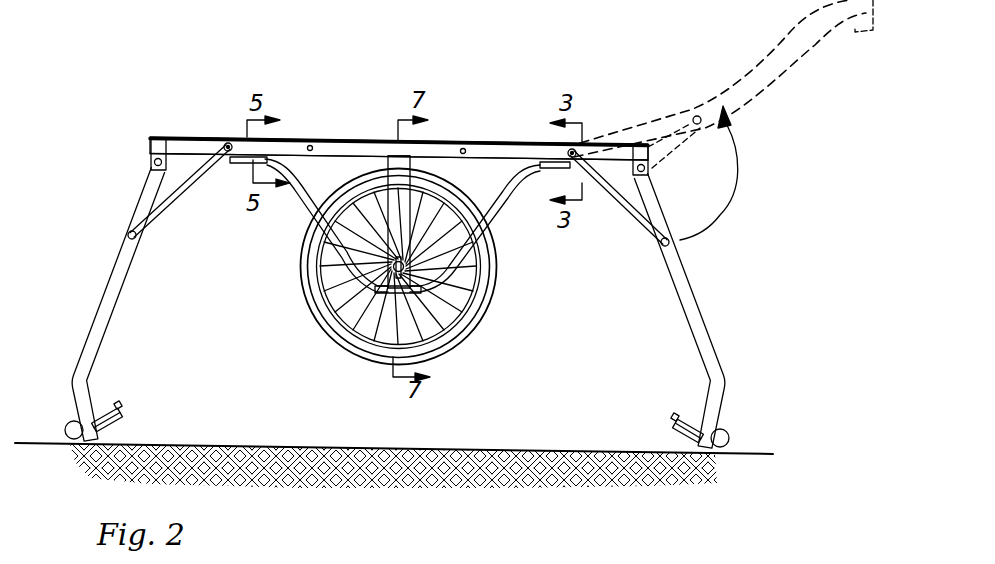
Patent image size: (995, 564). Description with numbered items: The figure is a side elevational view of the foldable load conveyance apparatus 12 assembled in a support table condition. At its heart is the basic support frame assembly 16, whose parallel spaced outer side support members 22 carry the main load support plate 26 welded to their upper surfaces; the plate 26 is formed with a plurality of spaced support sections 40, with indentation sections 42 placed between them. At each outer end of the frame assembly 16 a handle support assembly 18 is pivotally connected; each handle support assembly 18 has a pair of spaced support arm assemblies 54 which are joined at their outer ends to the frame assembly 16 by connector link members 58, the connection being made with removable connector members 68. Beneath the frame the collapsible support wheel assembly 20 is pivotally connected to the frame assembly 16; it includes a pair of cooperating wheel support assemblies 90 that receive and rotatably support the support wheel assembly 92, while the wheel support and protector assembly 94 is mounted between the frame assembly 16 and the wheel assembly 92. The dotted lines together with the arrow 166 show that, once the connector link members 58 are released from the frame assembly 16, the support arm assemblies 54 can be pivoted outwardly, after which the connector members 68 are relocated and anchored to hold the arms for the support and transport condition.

The foldable load conveyance apparatus 12 is at (453, 72).
The basic support frame assembly 16 is at (448, 130).
The handle support assemblies 18 is at (125, 313).
The collapsible support wheel assembly 20 is at (510, 276).
The outer side support members 22 is at (353, 153).
The main load support plate 26 is at (325, 137).
The support sections 40 is at (173, 137).
The indentation sections 42 is at (247, 133).
The support arm assemblies 54 is at (748, 91).
The connector link members 58 is at (155, 217).
The connector members 68 is at (228, 147).
The wheel support assemblies 90 is at (300, 200).
The support wheel assembly 92 is at (480, 333).
The wheel support and protector assembly 94 is at (397, 205).
The arrow 166 is at (740, 163).